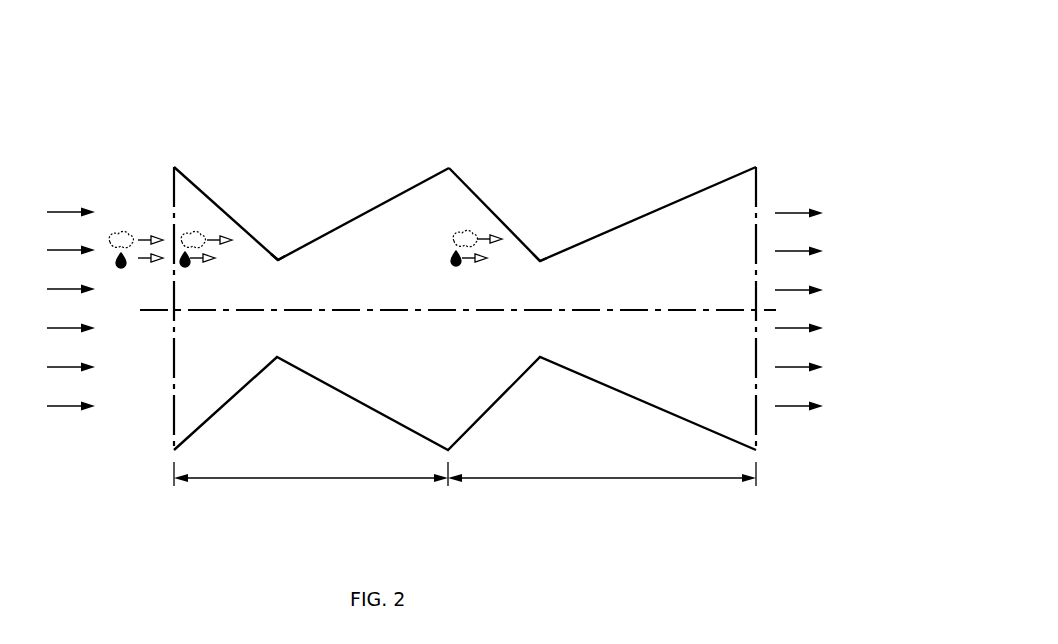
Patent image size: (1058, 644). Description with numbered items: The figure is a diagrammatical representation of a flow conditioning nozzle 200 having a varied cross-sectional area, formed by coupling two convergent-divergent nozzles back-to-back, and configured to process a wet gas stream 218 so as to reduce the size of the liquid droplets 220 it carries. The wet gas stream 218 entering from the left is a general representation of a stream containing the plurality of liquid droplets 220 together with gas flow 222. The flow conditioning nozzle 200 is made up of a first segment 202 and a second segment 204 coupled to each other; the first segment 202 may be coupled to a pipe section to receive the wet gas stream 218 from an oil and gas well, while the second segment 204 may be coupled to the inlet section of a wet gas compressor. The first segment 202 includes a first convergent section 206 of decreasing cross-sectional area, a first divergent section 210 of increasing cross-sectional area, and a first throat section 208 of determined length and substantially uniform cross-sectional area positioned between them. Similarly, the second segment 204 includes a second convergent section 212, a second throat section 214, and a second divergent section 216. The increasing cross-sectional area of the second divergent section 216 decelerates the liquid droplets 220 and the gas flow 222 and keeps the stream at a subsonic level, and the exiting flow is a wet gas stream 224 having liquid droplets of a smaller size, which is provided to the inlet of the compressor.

The flow conditioning nozzle 200 is at (645, 84).
The first segment 202 is at (355, 481).
The second segment 204 is at (600, 481).
The first convergent section 206 is at (189, 176).
The first throat section 208 is at (276, 256).
The first divergent section 210 is at (364, 212).
The second convergent section 212 is at (472, 190).
The second throat section 214 is at (539, 257).
The second divergent section 216 is at (718, 183).
The wet gas stream 218 is at (62, 211).
The liquid droplets 220 is at (122, 267).
The gas flow 222 is at (121, 233).
The wet gas stream having liquid droplets of a smaller size 224 is at (788, 211).